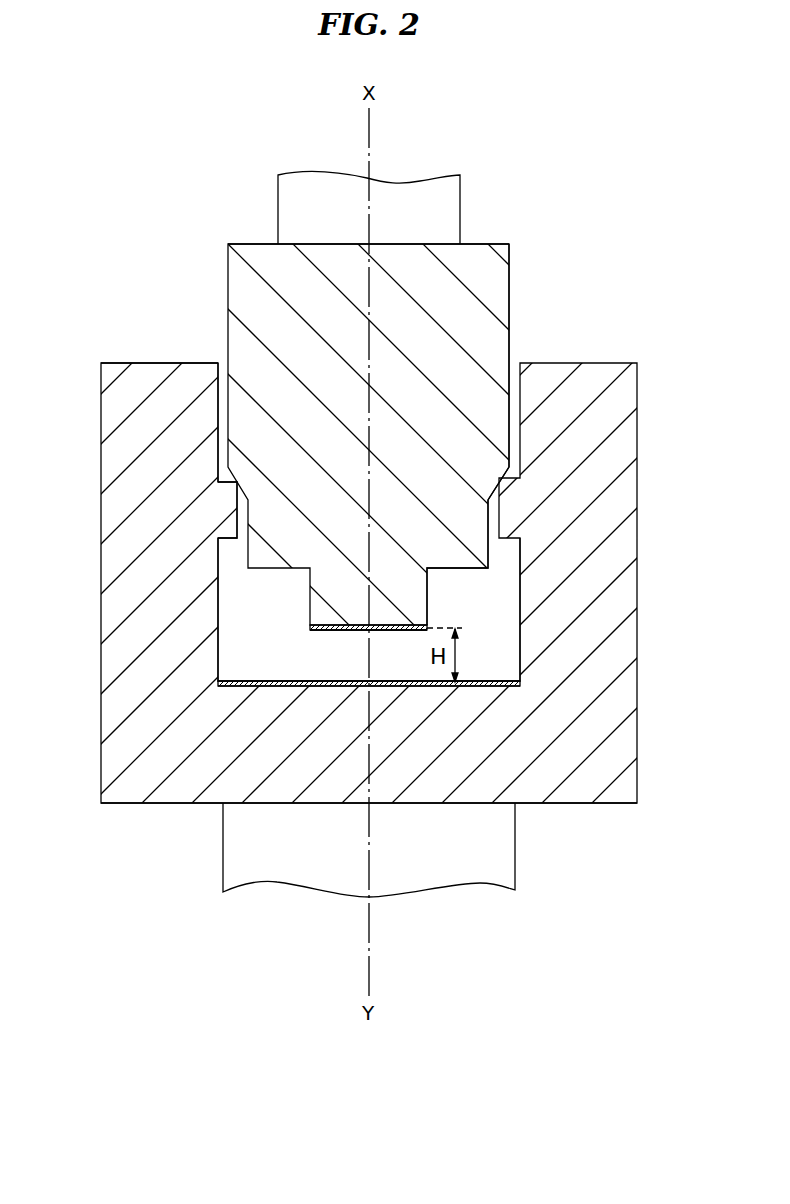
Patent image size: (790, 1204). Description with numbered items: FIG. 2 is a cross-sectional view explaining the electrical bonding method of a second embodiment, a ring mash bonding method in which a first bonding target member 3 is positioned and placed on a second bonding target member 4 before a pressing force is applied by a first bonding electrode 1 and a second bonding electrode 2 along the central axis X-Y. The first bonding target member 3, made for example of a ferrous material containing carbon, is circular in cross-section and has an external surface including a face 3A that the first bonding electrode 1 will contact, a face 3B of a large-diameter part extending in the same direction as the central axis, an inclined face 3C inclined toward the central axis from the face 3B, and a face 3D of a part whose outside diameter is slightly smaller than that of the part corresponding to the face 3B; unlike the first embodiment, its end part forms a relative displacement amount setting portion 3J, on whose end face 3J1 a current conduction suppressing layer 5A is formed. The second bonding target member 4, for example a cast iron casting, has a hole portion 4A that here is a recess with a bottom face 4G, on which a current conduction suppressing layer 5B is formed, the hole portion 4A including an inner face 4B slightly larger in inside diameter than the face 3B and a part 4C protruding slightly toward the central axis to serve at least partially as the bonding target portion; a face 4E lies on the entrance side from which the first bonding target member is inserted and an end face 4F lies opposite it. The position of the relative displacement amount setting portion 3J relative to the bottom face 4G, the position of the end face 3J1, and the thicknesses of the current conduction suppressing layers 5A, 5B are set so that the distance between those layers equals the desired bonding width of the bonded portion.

The first bonding electrode 1 is at (266, 203).
The second bonding electrode 2 is at (205, 872).
The first bonding target member 3 is at (525, 302).
The face 3A is at (475, 243).
The face 3B is at (512, 275).
The inclined face 3C is at (492, 488).
The face 3D is at (488, 548).
The relative displacement amount setting portion 3J is at (420, 600).
The end face 3J1 is at (327, 625).
The second bonding target member 4 is at (104, 345).
The hole portion 4A is at (248, 610).
The inner face 4B is at (215, 412).
The part 4C is at (233, 498).
The face 4E is at (153, 362).
The end face 4F is at (535, 803).
The bottom face 4G is at (428, 687).
The current conduction suppressing layer 5A is at (343, 642).
The current conduction suppressing layer 5B is at (482, 664).